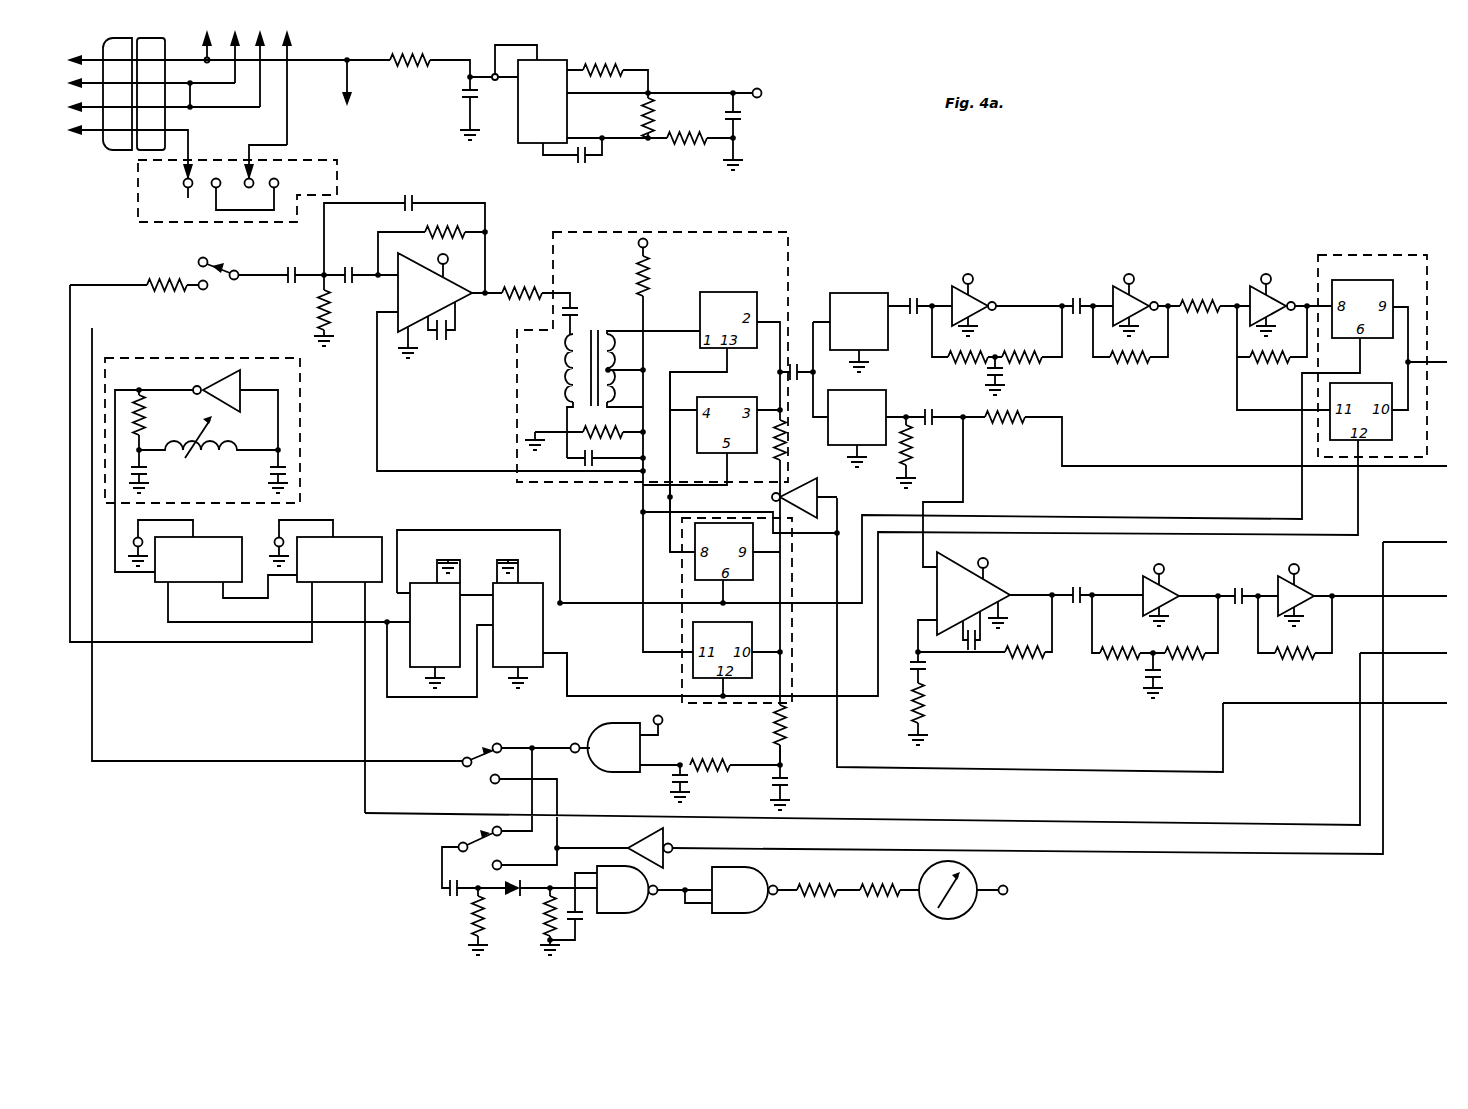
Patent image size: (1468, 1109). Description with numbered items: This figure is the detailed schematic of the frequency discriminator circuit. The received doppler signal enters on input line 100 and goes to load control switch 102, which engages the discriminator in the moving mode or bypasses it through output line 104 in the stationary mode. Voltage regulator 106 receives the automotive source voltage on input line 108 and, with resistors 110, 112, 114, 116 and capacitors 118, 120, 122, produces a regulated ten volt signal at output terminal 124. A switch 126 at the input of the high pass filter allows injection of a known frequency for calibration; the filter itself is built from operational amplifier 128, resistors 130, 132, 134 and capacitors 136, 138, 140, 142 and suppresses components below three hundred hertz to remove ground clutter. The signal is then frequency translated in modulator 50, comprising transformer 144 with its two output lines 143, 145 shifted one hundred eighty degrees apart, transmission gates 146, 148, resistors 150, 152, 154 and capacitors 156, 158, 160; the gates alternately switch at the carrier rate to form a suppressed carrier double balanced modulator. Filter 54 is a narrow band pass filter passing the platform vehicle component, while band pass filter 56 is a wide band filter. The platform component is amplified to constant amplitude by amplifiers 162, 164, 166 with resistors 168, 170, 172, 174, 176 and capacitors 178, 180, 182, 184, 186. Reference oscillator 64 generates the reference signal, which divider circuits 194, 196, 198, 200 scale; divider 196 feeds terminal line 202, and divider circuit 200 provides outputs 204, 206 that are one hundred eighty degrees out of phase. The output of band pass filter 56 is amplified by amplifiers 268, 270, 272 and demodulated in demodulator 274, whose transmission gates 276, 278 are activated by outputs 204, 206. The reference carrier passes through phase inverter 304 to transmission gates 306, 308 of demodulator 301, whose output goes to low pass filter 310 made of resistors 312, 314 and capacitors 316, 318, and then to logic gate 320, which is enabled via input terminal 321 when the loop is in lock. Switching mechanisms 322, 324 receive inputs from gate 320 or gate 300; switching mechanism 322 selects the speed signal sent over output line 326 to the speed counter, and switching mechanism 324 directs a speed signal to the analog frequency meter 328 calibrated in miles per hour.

The modulator 50 is at (788, 235).
The filter 54 is at (888, 400).
The band pass filter 56 is at (876, 280).
The reference oscillator 64 is at (301, 392).
The input line 100 is at (192, 152).
The load control switch 102 is at (338, 163).
The output line 104 is at (290, 98).
The voltage regulator 106 is at (528, 146).
The input line 108 is at (305, 62).
The resistor 110 is at (414, 58).
The resistor 112 is at (614, 68).
The resistor 114 is at (643, 112).
The resistor 116 is at (690, 142).
The capacitor 118 is at (466, 96).
The capacitor 120 is at (590, 162).
The capacitor 122 is at (745, 118).
The output terminal 124 is at (763, 92).
The switch 126 is at (200, 272).
The operational amplifier 128 is at (397, 294).
The resistor 130 is at (318, 300).
The resistor 132 is at (430, 232).
The resistor 134 is at (525, 290).
The capacitor 136 is at (296, 265).
The capacitor 138 is at (358, 265).
The capacitor 140 is at (404, 200).
The capacitor 142 is at (448, 338).
The output line 143 is at (698, 331).
The transformer 144 is at (566, 372).
The output line 145 is at (686, 410).
The transmission gate 146 is at (727, 398).
The transmission gate 148 is at (718, 292).
The resistor 150 is at (605, 424).
The resistor 152 is at (650, 283).
The resistor 154 is at (778, 458).
The capacitor 156 is at (594, 458).
The capacitor 158 is at (575, 312).
The capacitor 160 is at (798, 364).
The amplifier 162 is at (990, 585).
The amplifier 164 is at (1168, 596).
The amplifier 166 is at (1308, 598).
The resistor 168 is at (928, 705).
The resistor 170 is at (1020, 658).
The resistor 172 is at (1133, 660).
The resistor 174 is at (1198, 655).
The resistor 176 is at (1292, 655).
The capacitor 178 is at (928, 668).
The capacitor 180 is at (982, 640).
The capacitor 182 is at (1078, 592).
The capacitor 184 is at (1140, 690).
The capacitor 186 is at (1262, 577).
The divider circuit 194 is at (207, 537).
The divider circuit 196 is at (352, 537).
The divider circuit 198 is at (410, 604).
The divider circuit 200 is at (543, 621).
The terminal line 202 is at (364, 700).
The output 204 is at (561, 603).
The output 206 is at (567, 657).
The amplifier 268 is at (972, 300).
The amplifier 270 is at (1145, 300).
The operational amplifier 272 is at (1255, 285).
The demodulator 274 is at (1362, 256).
The transmission gate 276 is at (1380, 282).
The transmission gate 278 is at (1364, 383).
The gate 300 is at (650, 838).
The demodulator 301 is at (680, 662).
The phase inverter 304 is at (818, 492).
The transmission gate 306 is at (733, 586).
The transmission gate 308 is at (716, 623).
The low pass filter 310 is at (765, 753).
The resistor 312 is at (785, 720).
The resistor 314 is at (715, 786).
The capacitor 316 is at (790, 778).
The capacitor 318 is at (668, 783).
The logic gate 320 is at (595, 735).
The input terminal 321 is at (655, 716).
The switching mechanism 322 is at (480, 752).
The switching mechanism 324 is at (460, 842).
The output line 326 is at (249, 761).
The analog frequency meter 328 is at (856, 882).